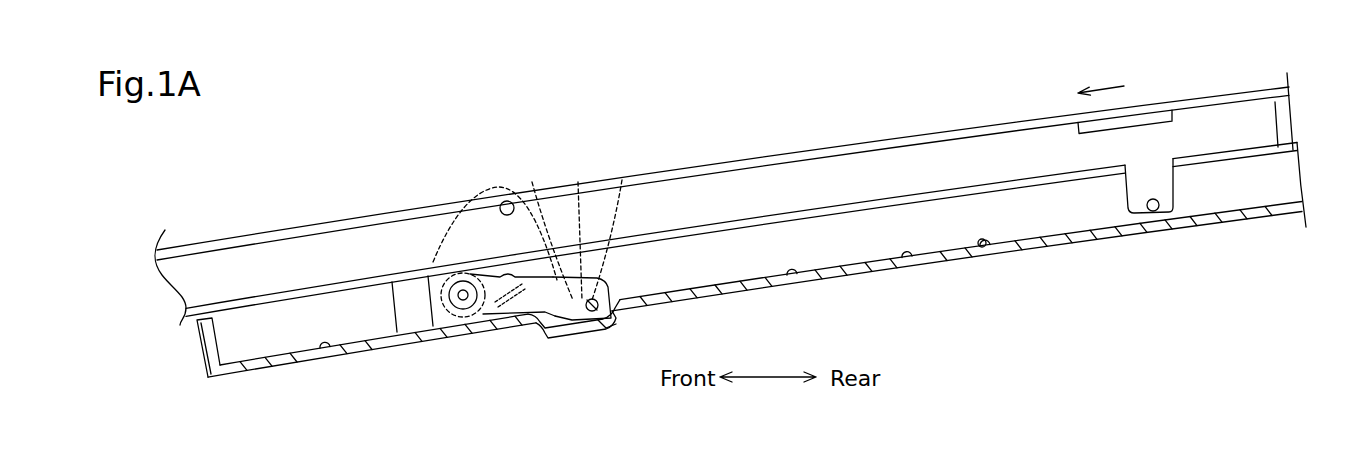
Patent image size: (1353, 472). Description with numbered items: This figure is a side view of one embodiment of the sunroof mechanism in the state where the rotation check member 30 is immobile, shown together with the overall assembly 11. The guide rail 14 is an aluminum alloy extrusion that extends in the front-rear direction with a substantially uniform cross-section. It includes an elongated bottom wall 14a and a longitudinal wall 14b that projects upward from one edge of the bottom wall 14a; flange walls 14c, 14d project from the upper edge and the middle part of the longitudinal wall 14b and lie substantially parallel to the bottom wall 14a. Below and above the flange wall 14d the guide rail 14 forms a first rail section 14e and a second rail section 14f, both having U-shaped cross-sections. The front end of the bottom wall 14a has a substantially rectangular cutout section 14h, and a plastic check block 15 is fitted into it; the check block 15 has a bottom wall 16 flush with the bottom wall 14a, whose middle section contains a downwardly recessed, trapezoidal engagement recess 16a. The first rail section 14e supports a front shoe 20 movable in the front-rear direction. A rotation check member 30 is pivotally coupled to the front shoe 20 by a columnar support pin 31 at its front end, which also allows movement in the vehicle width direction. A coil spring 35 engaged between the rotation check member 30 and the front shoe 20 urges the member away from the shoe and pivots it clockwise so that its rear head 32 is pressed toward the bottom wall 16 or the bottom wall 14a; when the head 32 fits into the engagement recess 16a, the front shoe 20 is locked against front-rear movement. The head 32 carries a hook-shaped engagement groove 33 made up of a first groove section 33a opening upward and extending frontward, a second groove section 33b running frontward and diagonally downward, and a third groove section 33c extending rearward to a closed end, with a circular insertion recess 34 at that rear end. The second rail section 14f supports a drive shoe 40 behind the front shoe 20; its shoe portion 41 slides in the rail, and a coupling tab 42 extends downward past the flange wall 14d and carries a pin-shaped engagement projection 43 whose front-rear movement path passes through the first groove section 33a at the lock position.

The seat slide apparatus 11 is at (831, 104).
The guide rail 14 is at (1062, 243).
The bottom wall 14a is at (985, 247).
The longitudinal wall 14b is at (953, 143).
The flange wall 14c is at (973, 123).
The flange wall 14d is at (1047, 190).
The first rail section 14e is at (907, 253).
The second rail section 14f is at (895, 177).
The cutout section 14h is at (792, 282).
The check block 15 is at (202, 350).
The bottom wall 16 is at (325, 353).
The engagement recess 16a is at (573, 330).
The front shoe 20 is at (397, 337).
The rotation check member 30 is at (513, 313).
The support pin 31 is at (463, 327).
The head 32 is at (557, 343).
The engagement groove 33 is at (490, 168).
The first groove section 33a is at (617, 223).
The second groove section 33b is at (536, 226).
The third groove section 33c is at (575, 226).
The insertion recess 34 is at (613, 327).
The coil spring 35 is at (488, 272).
The drive shoe 40 is at (1207, 100).
The shoe portion 41 is at (1280, 123).
The coupling tab 42 is at (1173, 187).
The engagement projection 43 is at (1153, 213).